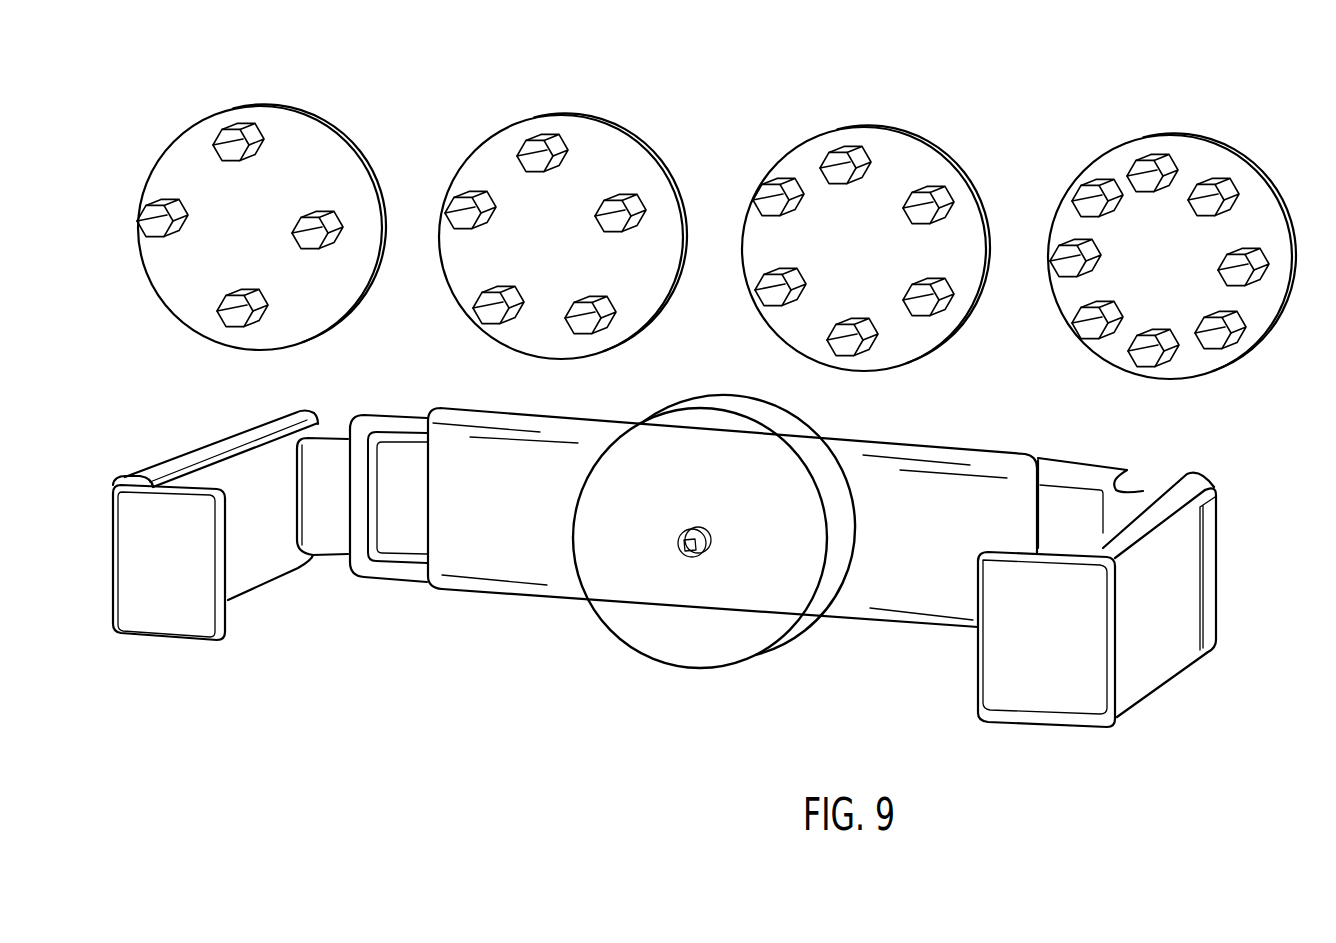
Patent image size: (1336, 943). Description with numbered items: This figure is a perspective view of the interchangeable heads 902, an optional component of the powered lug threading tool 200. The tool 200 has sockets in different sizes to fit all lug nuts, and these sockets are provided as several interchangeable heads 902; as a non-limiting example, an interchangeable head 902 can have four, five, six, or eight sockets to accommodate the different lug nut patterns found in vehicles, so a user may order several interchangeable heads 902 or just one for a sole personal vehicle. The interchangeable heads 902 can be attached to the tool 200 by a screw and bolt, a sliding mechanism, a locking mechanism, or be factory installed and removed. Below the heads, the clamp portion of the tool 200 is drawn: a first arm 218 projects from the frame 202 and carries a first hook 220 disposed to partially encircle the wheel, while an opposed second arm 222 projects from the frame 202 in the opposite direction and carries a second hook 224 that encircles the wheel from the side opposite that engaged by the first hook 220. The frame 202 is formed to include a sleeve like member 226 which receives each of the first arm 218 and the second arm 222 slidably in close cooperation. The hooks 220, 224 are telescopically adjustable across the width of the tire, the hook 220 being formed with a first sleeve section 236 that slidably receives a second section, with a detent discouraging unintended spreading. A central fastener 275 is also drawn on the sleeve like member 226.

The interchangeable head 902 is at (343, 117).
The powered lug threading tool 200 is at (1258, 466).
The frame 202 is at (553, 612).
The first arm 218 is at (423, 610).
The first hook 220 is at (187, 650).
The second arm 222 is at (917, 635).
The second hook 224 is at (1038, 732).
The sleeve like member 226 is at (843, 618).
The first sleeve section 236 is at (170, 430).
The central hub fastener 275 is at (683, 557).